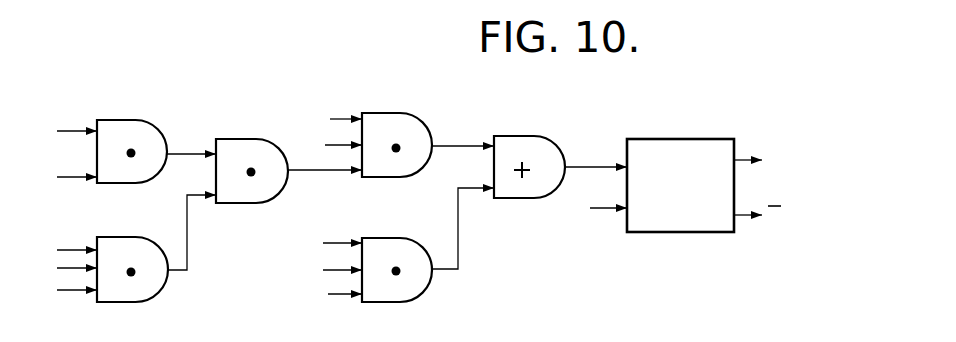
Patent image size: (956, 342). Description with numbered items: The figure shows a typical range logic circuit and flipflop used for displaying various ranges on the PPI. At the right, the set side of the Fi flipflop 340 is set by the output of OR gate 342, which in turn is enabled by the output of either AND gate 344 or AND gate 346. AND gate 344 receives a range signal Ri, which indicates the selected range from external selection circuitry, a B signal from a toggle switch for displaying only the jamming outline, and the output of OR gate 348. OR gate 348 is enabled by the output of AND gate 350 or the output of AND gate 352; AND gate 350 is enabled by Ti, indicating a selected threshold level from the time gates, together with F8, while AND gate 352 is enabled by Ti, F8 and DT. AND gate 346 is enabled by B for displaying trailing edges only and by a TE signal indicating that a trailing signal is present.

The Fi flipflop 340 is at (735, 137).
The OR gate 342 is at (548, 199).
The AND gate 344 is at (425, 113).
The AND gate 346 is at (425, 238).
The OR gate 348 is at (278, 139).
The AND gate 350 is at (157, 119).
The AND gate 352 is at (157, 236).